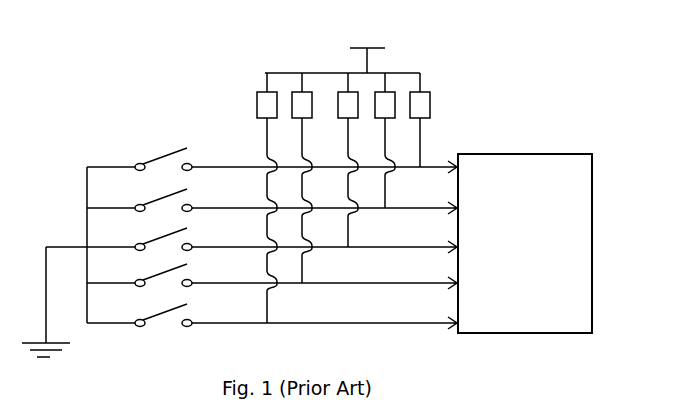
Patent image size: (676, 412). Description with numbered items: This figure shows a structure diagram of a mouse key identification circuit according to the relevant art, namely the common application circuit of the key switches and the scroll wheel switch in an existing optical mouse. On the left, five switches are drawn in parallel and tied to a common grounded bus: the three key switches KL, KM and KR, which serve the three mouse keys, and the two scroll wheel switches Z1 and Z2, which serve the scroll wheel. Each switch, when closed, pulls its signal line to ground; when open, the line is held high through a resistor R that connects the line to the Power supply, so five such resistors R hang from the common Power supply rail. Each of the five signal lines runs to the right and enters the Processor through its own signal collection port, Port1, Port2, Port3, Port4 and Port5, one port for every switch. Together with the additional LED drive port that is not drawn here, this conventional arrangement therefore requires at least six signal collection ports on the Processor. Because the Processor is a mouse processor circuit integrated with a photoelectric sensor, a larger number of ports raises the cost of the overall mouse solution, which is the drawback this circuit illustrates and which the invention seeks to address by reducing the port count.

The KL port KL is at (139, 152).
The KM port KM is at (139, 198).
The KR port KR is at (139, 236).
The Z1 port Z1 is at (139, 273).
The Z2 port Z2 is at (139, 312).
The resistor R is at (347, 198).
The port 1 Port1 is at (324, 179).
The port 2 Port2 is at (324, 219).
The port 3 Port3 is at (324, 257).
The port 4 Port4 is at (324, 294).
The port 5 Port5 is at (324, 334).
The processor Processor is at (525, 243).
The power supply Power supply is at (350, 46).